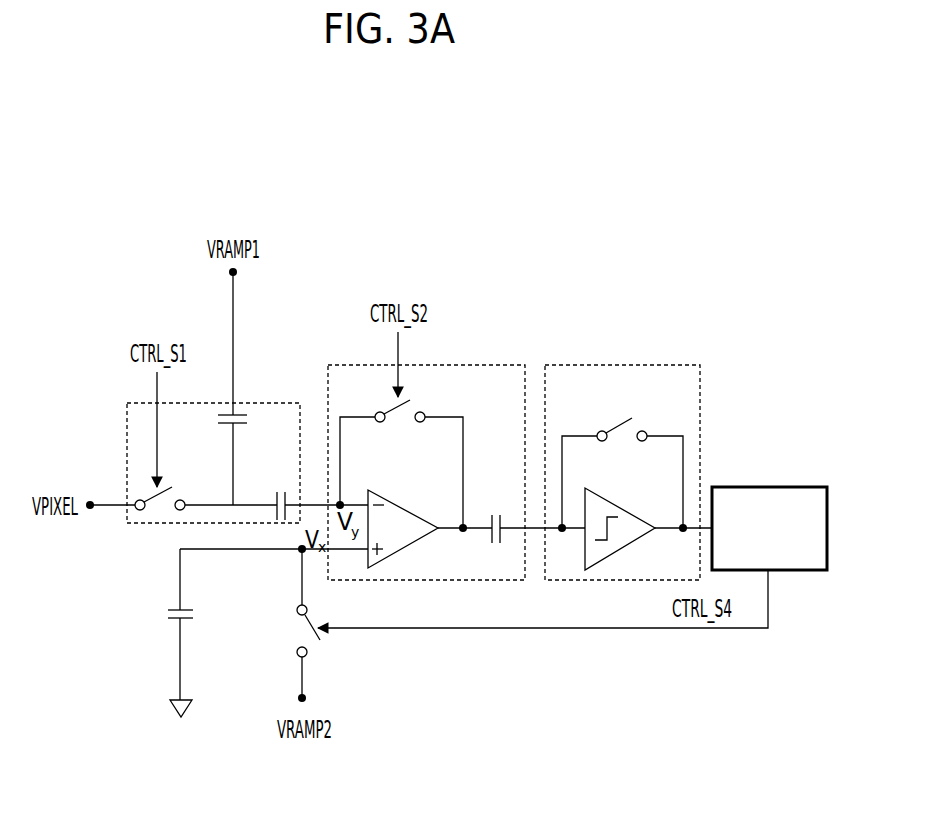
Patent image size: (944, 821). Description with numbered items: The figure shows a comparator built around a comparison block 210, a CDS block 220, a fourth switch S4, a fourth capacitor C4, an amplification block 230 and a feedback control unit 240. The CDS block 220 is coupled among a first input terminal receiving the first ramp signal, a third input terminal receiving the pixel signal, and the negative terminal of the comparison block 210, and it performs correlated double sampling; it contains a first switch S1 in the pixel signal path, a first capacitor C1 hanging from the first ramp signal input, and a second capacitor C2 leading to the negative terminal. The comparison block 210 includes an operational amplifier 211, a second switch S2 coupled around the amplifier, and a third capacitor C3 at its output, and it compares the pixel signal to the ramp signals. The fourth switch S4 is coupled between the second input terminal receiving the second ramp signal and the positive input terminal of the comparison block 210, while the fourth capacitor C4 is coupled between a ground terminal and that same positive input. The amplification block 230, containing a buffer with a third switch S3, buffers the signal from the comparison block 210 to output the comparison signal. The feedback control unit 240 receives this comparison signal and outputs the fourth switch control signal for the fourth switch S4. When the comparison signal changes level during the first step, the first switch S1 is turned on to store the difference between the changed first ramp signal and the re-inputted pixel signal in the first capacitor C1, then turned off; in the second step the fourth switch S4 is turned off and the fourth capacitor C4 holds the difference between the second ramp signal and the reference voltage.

The comparison block 210 is at (480, 365).
The operational amplifier 211 is at (407, 510).
The CDS block 220 is at (267, 403).
The amplification block 230 is at (658, 365).
The feedback control unit 240 is at (787, 487).
The first switch S1 is at (161, 484).
The second switch S2 is at (401, 449).
The third switch S3 is at (622, 457).
The fourth switch S4 is at (295, 625).
The first capacitor C1 is at (245, 388).
The second capacitor C2 is at (282, 490).
The third capacitor C3 is at (497, 513).
The fourth capacitor C4 is at (165, 633).